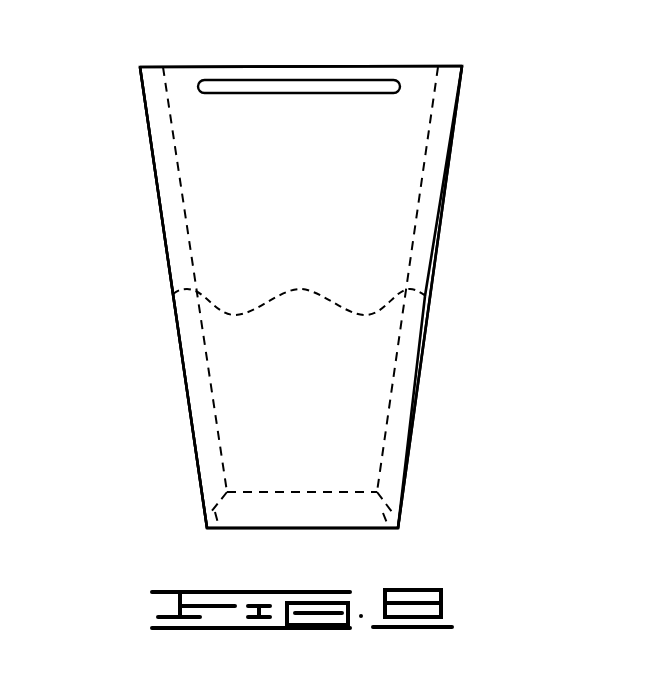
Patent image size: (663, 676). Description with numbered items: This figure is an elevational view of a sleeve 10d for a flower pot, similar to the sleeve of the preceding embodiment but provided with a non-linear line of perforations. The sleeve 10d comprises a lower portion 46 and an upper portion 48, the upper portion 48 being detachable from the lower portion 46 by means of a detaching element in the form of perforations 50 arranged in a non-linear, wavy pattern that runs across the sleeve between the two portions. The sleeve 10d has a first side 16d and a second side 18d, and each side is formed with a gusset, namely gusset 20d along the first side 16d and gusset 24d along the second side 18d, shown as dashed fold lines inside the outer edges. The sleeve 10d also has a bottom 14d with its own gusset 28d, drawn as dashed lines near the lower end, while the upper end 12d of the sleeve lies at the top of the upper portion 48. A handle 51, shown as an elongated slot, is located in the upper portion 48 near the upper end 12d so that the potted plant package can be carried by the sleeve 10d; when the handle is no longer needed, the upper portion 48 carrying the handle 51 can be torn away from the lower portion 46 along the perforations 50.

The sleeve 10d is at (478, 194).
The upper end 12d is at (230, 66).
The bottom 14d is at (360, 528).
The first side 16d is at (152, 150).
The second side 18d is at (455, 130).
The gusset 20d is at (157, 90).
The gusset 24d is at (447, 82).
The gusset 28d is at (383, 500).
The lower portion 46 is at (188, 403).
The upper portion 48 is at (162, 223).
The perforations 50 is at (367, 315).
The handle 51 is at (373, 82).